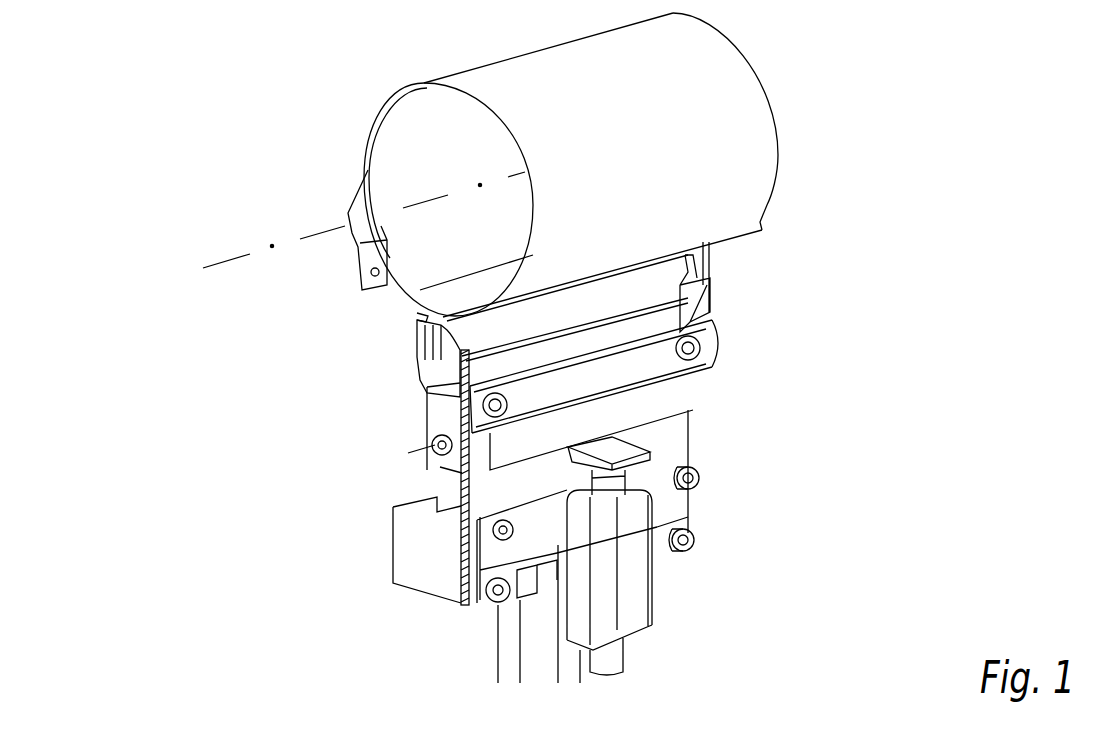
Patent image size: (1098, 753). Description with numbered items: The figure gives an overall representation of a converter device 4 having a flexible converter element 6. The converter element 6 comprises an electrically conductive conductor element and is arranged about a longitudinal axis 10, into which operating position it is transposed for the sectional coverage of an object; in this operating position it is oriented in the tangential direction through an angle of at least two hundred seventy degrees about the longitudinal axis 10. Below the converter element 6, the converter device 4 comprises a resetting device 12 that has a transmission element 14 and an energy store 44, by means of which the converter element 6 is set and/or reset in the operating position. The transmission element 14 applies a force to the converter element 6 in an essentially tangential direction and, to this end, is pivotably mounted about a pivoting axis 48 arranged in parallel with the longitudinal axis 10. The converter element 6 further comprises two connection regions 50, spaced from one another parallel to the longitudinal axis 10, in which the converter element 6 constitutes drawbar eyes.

The converter device 4 is at (151, 134).
The converter element 6 is at (745, 113).
The longitudinal axis 10 is at (225, 257).
The resetting device 12 is at (298, 377).
The transmission element 14 is at (447, 413).
The energy store 44 is at (613, 540).
The pivoting axis 48 is at (738, 360).
The connection regions 50 is at (393, 331).